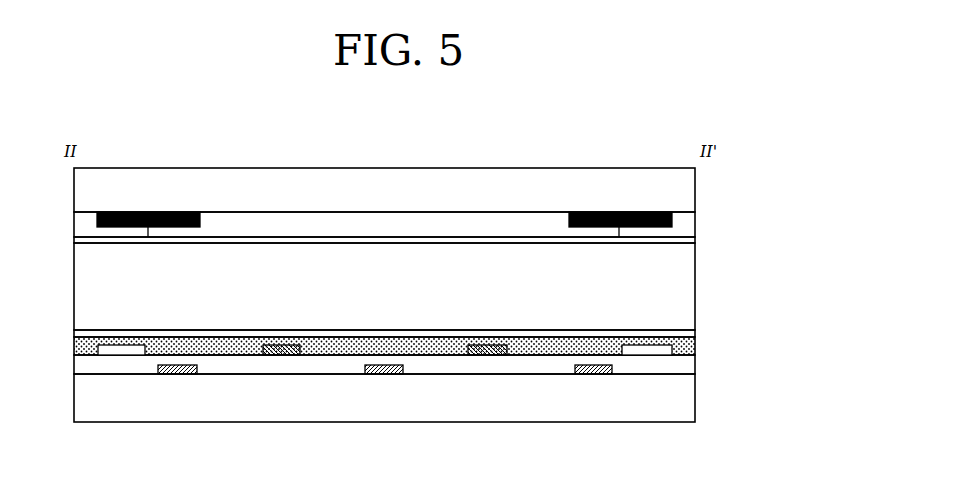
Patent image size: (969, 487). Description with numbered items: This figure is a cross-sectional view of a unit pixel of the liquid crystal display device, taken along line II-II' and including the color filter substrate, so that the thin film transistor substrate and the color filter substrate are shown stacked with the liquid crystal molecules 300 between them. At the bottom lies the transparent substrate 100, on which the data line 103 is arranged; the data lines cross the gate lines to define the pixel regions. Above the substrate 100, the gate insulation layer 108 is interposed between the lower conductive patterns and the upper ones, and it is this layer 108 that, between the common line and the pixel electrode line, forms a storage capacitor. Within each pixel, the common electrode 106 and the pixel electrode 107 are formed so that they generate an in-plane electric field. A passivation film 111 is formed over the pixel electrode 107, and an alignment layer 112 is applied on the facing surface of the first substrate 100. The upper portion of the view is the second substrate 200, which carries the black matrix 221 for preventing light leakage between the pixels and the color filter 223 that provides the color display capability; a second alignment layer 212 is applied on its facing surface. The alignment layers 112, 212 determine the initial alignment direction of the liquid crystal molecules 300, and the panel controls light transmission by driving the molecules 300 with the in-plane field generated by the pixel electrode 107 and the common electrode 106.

The transparent substrate 100 is at (683, 405).
The data line 103 is at (120, 351).
The common electrode 106 is at (175, 374).
The pixel electrode 107 is at (280, 355).
The gate insulation layer 108 is at (683, 365).
The passivation film 111 is at (685, 350).
The alignment layer 112 is at (683, 334).
The second substrate 200 is at (683, 192).
The alignment layer 212 is at (683, 241).
The black matrix 221 is at (589, 215).
The color filter 223 is at (443, 225).
The liquid crystal molecules 300 is at (683, 290).